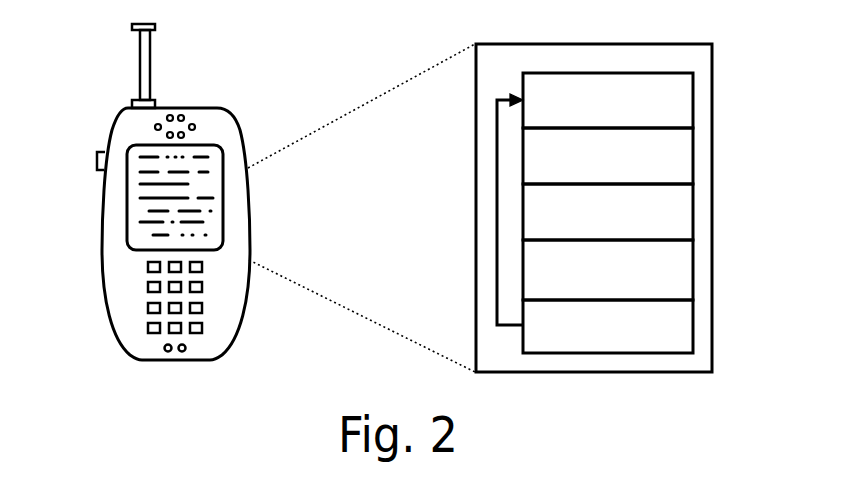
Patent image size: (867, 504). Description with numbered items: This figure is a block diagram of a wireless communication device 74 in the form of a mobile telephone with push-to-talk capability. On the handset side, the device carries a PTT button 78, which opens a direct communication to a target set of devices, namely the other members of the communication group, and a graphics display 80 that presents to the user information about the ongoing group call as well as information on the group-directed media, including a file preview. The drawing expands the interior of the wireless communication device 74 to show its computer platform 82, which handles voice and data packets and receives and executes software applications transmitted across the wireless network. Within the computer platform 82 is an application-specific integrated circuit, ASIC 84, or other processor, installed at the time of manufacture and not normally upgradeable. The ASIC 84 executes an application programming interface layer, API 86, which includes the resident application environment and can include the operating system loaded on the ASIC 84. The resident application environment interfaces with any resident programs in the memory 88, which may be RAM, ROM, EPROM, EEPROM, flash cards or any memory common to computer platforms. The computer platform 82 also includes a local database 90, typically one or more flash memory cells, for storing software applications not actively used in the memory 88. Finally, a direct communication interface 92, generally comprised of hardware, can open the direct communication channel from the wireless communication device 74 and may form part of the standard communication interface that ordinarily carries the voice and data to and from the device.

The wireless communication device 74 is at (216, 108).
The PTT button 78 is at (96, 159).
The graphics display 80 is at (126, 209).
The computer platform 82 is at (476, 174).
The application-specific integrated circuit (ASIC) 84 is at (693, 210).
The application programming interface (API) layer 86 is at (693, 158).
The memory 88 is at (693, 101).
The local database 90 is at (693, 308).
The direct communication interface 92 is at (693, 267).